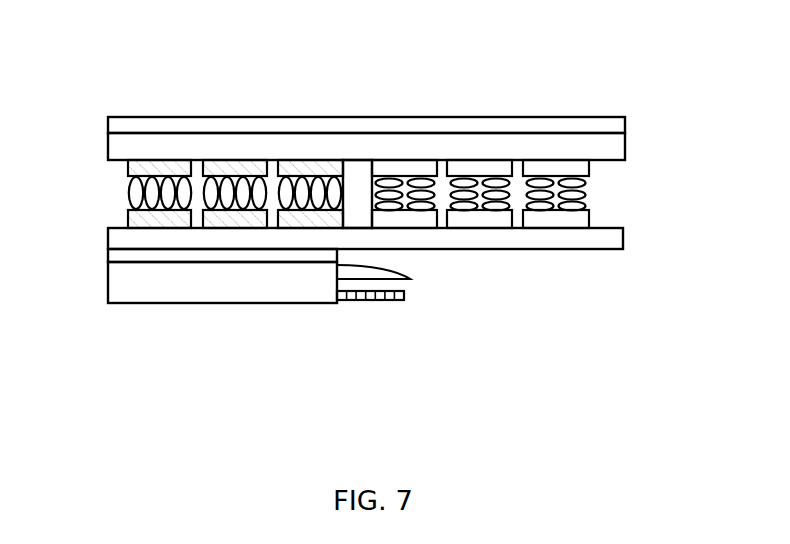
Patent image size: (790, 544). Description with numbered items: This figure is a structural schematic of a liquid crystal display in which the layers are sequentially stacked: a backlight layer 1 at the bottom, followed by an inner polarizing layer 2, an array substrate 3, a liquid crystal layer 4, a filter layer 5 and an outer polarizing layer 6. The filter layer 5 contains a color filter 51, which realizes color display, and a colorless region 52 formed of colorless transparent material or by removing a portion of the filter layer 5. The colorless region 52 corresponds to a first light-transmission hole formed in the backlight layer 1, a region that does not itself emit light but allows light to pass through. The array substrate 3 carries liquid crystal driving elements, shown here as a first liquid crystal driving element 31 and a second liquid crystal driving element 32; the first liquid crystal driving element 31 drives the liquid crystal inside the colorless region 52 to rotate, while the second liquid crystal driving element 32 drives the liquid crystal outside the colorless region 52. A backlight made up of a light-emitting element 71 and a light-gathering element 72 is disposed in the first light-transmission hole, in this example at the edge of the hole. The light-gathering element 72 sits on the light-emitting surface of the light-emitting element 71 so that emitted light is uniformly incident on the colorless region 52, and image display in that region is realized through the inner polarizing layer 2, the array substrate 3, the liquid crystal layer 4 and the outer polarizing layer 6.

The backlight layer 1 is at (191, 294).
The inner polarizing layer 2 is at (189, 246).
The array substrate 3 is at (406, 258).
The liquid crystal layer 4 is at (536, 184).
The filter layer 5 is at (402, 131).
The outer polarizing layer 6 is at (402, 104).
The first liquid crystal driving element 31 is at (540, 212).
The second liquid crystal driving element 32 is at (189, 206).
The color filter 51 is at (189, 128).
The colorless region 52 is at (345, 117).
The light-emitting element 71 is at (353, 334).
The light-gathering element 72 is at (326, 314).